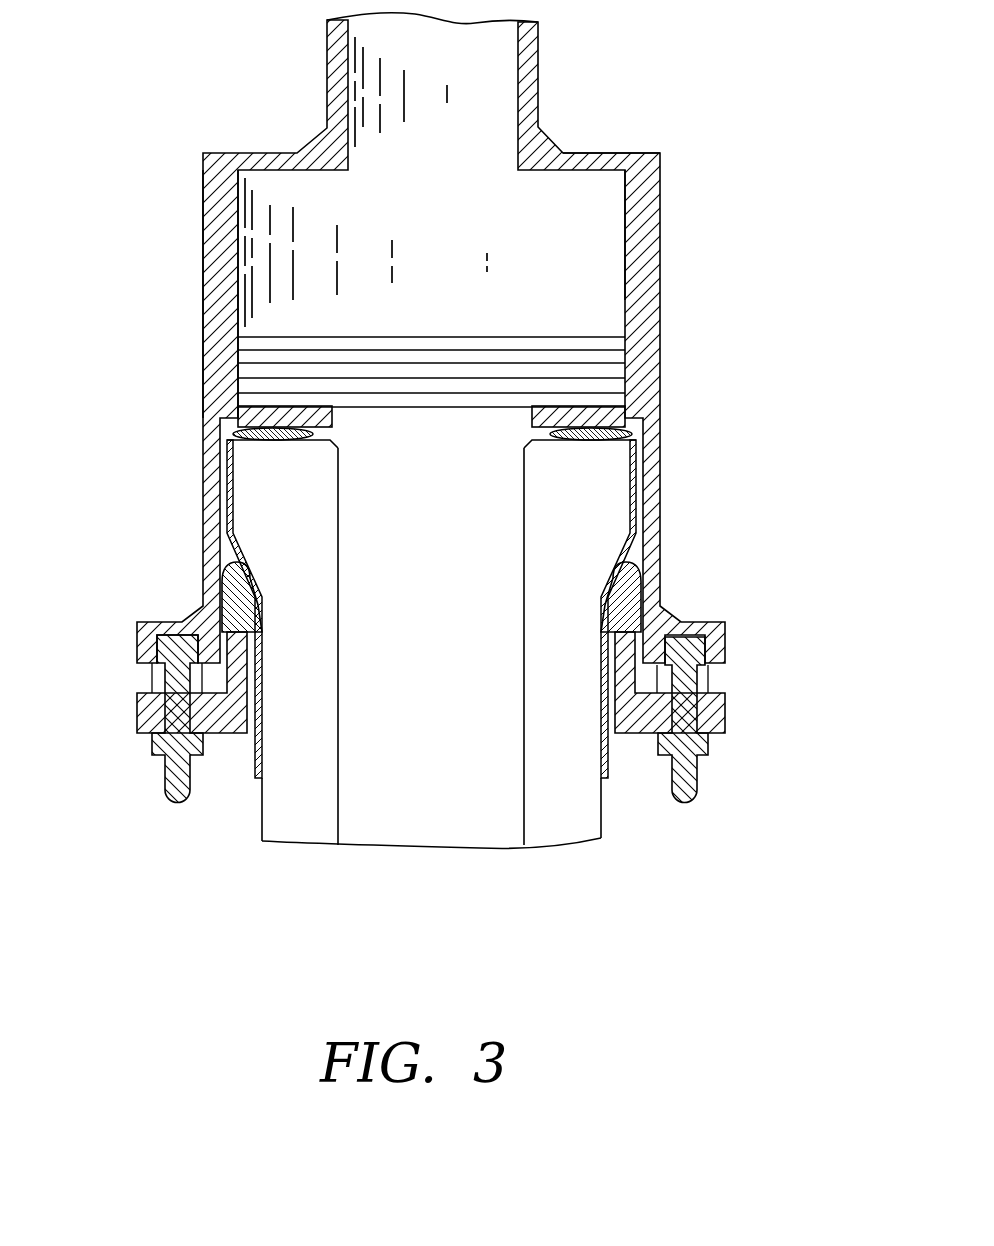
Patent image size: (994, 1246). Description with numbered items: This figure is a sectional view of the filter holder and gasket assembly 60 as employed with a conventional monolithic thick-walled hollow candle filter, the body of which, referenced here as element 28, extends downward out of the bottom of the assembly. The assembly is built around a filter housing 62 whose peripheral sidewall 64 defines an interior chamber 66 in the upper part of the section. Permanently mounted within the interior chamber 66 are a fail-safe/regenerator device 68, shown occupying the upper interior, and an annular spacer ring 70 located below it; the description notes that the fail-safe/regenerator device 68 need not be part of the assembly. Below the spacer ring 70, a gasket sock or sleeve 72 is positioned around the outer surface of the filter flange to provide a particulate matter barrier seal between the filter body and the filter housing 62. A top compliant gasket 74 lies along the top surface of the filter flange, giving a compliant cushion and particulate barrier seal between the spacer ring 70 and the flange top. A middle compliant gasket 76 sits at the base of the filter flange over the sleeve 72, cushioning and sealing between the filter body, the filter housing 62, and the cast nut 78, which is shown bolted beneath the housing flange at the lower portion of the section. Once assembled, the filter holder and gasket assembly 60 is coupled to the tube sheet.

The filter holder and gasket assembly 60 is at (250, 102).
The filter housing 62 is at (662, 300).
The peripheral sidewall 64 is at (222, 276).
The interior chamber 66 is at (627, 205).
The fail-safe/regenerator device 68 is at (560, 248).
The annular spacer ring 70 is at (590, 408).
The gasket sock or sleeve 72 is at (637, 494).
The top compliant gasket 74 is at (628, 433).
The middle compliant gasket 76 is at (637, 572).
The cast nut 78 is at (725, 722).
The tube 28 is at (566, 878).